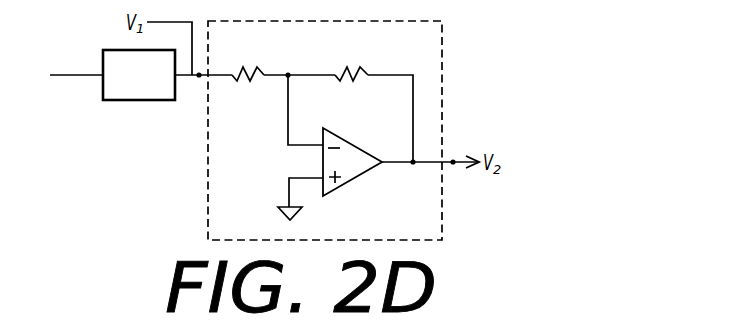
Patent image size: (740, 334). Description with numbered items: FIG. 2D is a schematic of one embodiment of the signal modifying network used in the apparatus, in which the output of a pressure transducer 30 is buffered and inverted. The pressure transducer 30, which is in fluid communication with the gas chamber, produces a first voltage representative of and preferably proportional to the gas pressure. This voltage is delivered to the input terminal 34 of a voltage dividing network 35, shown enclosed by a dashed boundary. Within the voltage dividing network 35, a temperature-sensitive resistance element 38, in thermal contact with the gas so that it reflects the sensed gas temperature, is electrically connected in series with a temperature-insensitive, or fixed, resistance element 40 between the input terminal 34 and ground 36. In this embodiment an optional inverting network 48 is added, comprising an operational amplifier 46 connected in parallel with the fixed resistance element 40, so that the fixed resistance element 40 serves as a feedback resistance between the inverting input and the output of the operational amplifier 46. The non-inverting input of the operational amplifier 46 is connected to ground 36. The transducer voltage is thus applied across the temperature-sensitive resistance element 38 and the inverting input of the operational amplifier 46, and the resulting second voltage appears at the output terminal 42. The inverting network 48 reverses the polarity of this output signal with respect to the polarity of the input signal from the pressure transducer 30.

The pressure transducer 30 is at (122, 100).
The input terminal 34 is at (199, 80).
The voltage dividing network 35 is at (208, 213).
The ground 36 is at (301, 208).
The temperature-sensitive resistance element 38 is at (243, 80).
The fixed resistance element 40 is at (370, 70).
The output terminal 42 is at (453, 166).
The operational amplifier 46 is at (360, 172).
The inverting network 48 is at (254, 155).